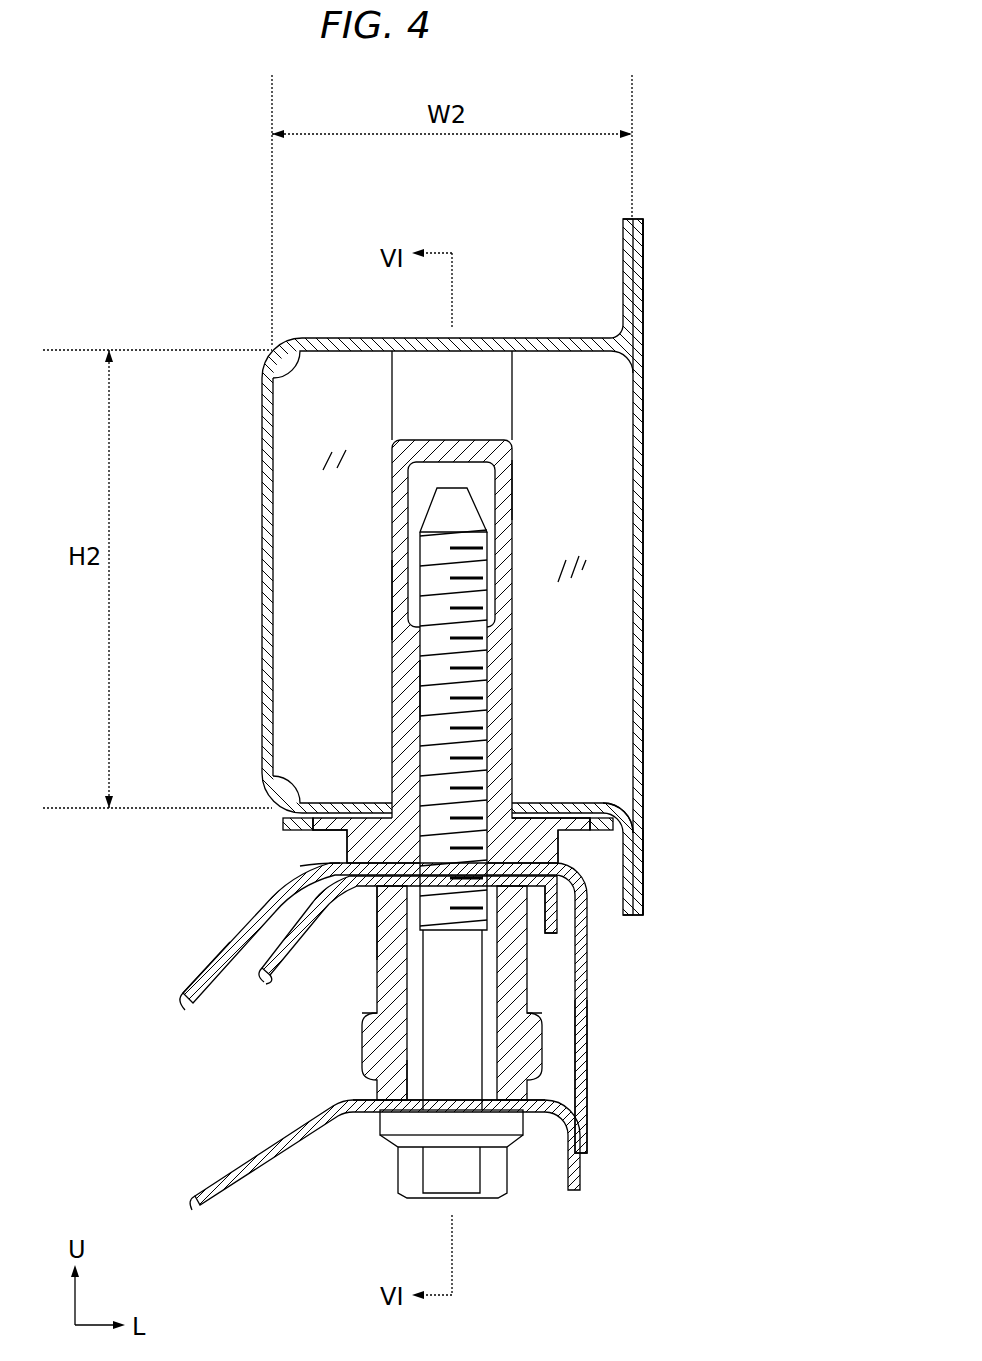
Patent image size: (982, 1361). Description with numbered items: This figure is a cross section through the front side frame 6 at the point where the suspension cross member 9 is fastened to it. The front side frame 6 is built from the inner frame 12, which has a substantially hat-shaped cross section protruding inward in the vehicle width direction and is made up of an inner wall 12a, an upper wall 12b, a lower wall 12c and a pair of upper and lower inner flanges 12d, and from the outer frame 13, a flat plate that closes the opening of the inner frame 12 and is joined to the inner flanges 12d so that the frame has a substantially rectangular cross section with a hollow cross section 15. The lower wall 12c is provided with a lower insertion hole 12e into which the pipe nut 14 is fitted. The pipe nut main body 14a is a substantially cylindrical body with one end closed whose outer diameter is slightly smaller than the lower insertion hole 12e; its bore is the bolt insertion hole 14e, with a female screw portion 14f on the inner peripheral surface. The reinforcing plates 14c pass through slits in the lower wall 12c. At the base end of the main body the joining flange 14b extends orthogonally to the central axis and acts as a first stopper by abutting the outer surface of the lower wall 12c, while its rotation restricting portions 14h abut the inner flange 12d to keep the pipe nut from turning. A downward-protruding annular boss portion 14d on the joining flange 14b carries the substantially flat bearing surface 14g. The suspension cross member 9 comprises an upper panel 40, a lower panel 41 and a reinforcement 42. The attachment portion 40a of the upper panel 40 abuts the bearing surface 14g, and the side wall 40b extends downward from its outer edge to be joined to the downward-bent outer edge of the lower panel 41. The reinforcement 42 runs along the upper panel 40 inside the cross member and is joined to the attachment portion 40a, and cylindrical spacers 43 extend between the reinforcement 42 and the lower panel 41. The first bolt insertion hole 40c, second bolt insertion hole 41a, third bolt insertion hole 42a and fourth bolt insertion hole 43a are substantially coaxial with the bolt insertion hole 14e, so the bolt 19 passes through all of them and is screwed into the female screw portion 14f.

The front side frame 6 is at (707, 322).
The suspension cross member 9 is at (205, 968).
The inner frame 12 is at (262, 405).
The inner wall 12a is at (262, 492).
The upper wall 12b is at (360, 338).
The lower wall 12c is at (283, 824).
The inner flanges 12d is at (623, 282).
The lower insertion holes 12e is at (515, 802).
The outer frame 13 is at (646, 408).
The pipe nut 14 is at (428, 440).
The pipe nut main body 14a is at (392, 602).
The joining flange 14b is at (347, 836).
The reinforcing plates 14c is at (614, 476).
The boss portion 14d is at (562, 848).
The bolt insertion hole 14e is at (378, 967).
The female screw portion 14f is at (422, 690).
The bearing surface 14g is at (545, 830).
The rotation restricting portions 14h is at (627, 835).
The hollow cross section 15 is at (485, 421).
The bolt 19 is at (393, 1146).
The upper panel 40 is at (248, 918).
The attachment portion 40a is at (315, 863).
The side wall 40b is at (587, 1062).
The first bolt insertion holes 40c is at (378, 938).
The lower panel 41 is at (295, 1133).
The second bolt insertion hole 41a is at (483, 1113).
The reinforcement 42 is at (297, 967).
The third bolt insertion hole 42a is at (493, 893).
The spacers 43 is at (377, 1015).
The fourth bolt insertion hole 43a is at (413, 1078).